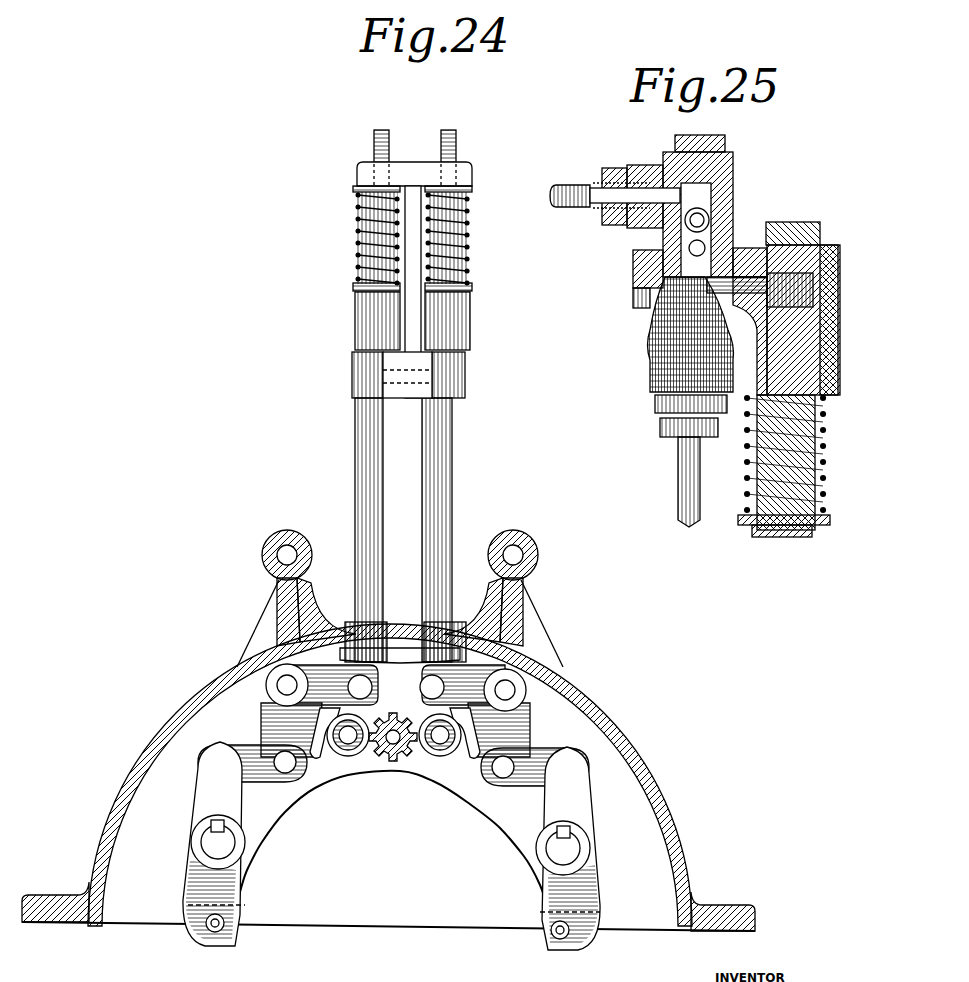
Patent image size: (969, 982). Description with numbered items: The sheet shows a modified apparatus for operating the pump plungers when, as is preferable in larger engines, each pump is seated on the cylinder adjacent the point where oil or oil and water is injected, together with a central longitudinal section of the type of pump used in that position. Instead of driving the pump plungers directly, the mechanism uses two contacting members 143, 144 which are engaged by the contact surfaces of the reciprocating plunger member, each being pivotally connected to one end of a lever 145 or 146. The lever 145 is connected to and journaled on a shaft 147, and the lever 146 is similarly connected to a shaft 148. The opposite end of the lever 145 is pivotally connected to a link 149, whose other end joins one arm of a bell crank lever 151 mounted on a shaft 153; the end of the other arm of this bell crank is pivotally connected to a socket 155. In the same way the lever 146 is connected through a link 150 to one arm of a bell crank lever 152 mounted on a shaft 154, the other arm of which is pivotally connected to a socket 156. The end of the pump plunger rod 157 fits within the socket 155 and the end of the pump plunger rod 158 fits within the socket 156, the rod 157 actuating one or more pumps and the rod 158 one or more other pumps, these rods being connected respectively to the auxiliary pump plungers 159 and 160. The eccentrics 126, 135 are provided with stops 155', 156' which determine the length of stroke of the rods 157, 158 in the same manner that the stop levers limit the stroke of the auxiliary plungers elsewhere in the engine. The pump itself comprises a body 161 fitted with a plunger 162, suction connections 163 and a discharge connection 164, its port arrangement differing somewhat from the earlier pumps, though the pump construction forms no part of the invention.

In FIG. 24, the eccentric 126 is at (344, 748).
In FIG. 24, the eccentric 135 is at (442, 748).
In FIG. 24, the contacting member 143 is at (226, 935).
In FIG. 24, the contacting member 144 is at (550, 940).
In FIG. 24, the lever 145 is at (233, 884).
In FIG. 24, the lever 146 is at (546, 893).
In FIG. 24, the shaft 147 is at (225, 845).
In FIG. 24, the shaft 148 is at (555, 848).
In FIG. 24, the link 149 is at (255, 775).
In FIG. 24, the link 150 is at (530, 778).
In FIG. 24, the bell crank lever 151 is at (270, 720).
In FIG. 24, the bell crank lever 152 is at (520, 728).
In FIG. 24, the shaft 153 is at (283, 684).
In FIG. 24, the shaft 154 is at (510, 690).
In FIG. 24, the socket 155 is at (352, 622).
In FIG. 24, the socket 156 is at (459, 622).
In FIG. 24, the stop 155' is at (326, 746).
In FIG. 24, the stop 156' is at (473, 746).
In FIG. 24, the pump plunger rod 157 is at (366, 498).
In FIG. 24, the pump plunger rod 158 is at (447, 497).
In FIG. 24, the auxiliary pump plunger 159 is at (360, 320).
In FIG. 24, the auxiliary pump plunger 160 is at (455, 328).
In FIG. 25, the body 161 is at (652, 342).
In FIG. 25, the plunger 162 is at (770, 432).
In FIG. 25, the suction connections 163 is at (690, 488).
In FIG. 25, the discharge connection 164 is at (570, 192).